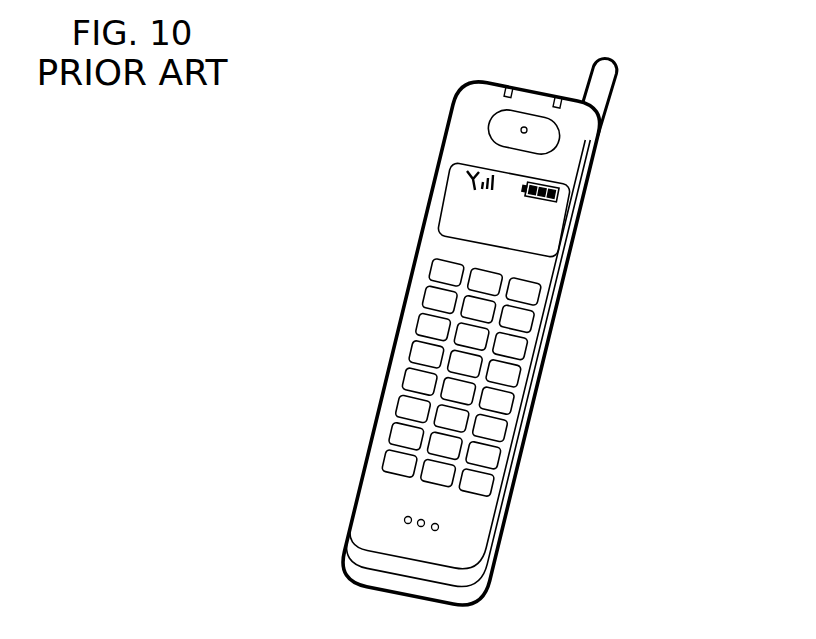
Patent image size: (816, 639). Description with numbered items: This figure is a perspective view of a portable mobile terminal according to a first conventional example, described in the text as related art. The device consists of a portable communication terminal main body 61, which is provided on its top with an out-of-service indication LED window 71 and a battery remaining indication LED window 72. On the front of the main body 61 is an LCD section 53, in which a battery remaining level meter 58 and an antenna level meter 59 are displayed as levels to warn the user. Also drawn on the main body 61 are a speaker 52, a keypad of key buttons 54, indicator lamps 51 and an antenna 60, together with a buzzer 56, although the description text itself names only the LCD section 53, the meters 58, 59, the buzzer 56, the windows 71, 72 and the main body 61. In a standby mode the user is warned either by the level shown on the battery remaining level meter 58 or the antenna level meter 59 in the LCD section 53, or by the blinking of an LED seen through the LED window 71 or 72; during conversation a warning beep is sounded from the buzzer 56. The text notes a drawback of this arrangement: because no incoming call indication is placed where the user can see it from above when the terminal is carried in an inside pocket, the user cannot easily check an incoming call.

The indicator lamps 51 is at (440, 525).
The speaker 52 is at (517, 117).
The LCD section 53 is at (437, 197).
The key buttons 54 is at (532, 278).
The buzzer 56 is at (588, 200).
The battery remaining level meter 58 is at (553, 183).
The antenna level meter 59 is at (462, 158).
The antenna 60 is at (620, 55).
The portable communication terminal main body 61 is at (532, 415).
The out-of-service indication LED window 71 is at (510, 80).
The battery remaining indication LED window 72 is at (557, 95).